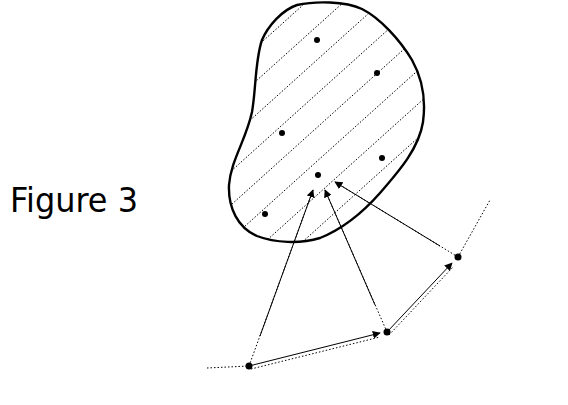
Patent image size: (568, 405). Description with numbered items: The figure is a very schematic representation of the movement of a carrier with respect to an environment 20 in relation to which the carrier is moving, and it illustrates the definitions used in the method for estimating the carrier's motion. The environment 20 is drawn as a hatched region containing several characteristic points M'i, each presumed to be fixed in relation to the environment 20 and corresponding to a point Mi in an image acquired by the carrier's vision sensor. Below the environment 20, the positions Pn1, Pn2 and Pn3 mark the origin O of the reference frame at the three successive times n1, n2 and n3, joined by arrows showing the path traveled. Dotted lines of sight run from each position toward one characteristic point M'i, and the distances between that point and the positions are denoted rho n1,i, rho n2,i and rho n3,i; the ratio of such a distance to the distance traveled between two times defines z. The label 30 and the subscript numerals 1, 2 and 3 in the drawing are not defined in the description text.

The environment 20 is at (257, 100).
The representation of object and measurement trajectory 30 is at (284, 185).
The reference point M'1 on object 1 is at (328, 30).
The reference point M'2 on object 2 is at (375, 63).
The measurement position Pn3 3 is at (471, 272).